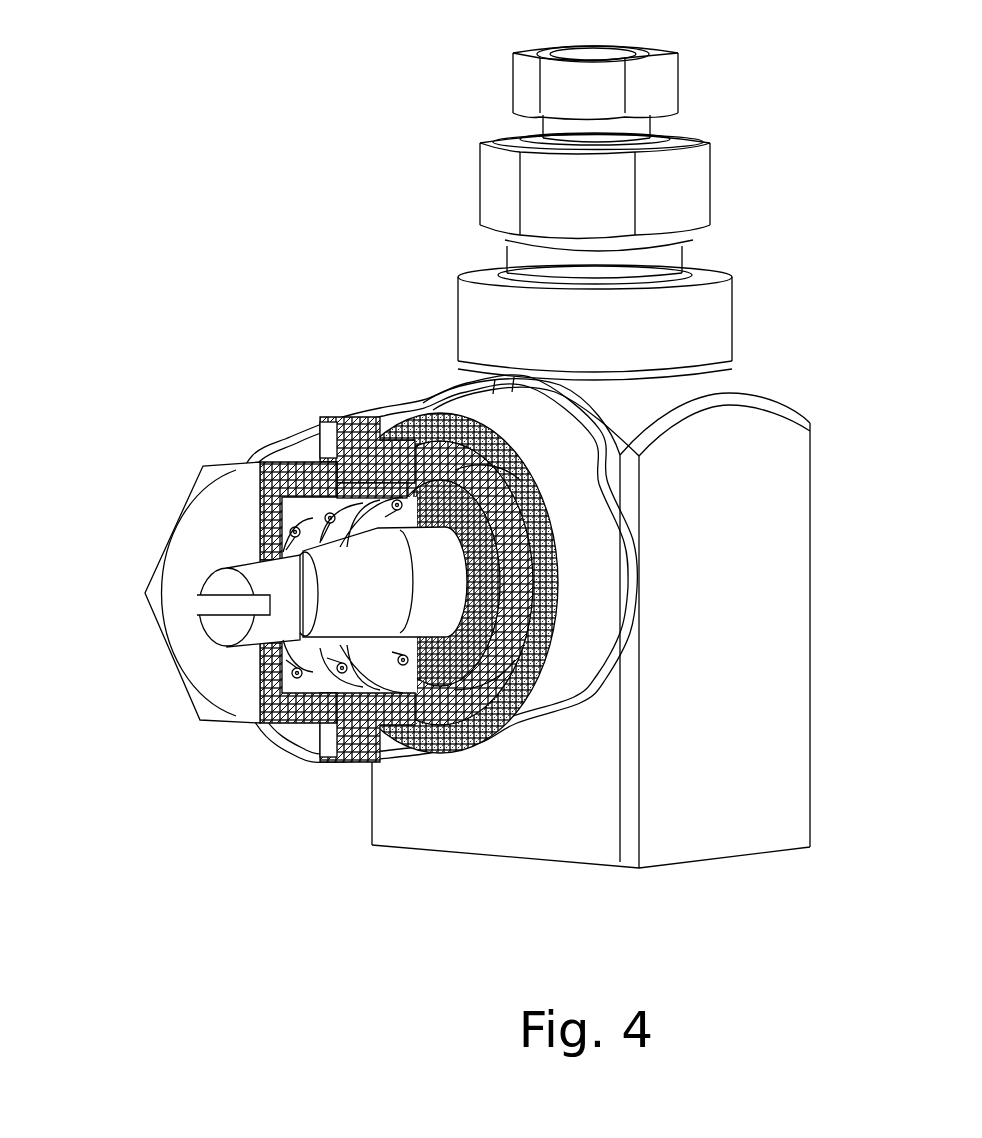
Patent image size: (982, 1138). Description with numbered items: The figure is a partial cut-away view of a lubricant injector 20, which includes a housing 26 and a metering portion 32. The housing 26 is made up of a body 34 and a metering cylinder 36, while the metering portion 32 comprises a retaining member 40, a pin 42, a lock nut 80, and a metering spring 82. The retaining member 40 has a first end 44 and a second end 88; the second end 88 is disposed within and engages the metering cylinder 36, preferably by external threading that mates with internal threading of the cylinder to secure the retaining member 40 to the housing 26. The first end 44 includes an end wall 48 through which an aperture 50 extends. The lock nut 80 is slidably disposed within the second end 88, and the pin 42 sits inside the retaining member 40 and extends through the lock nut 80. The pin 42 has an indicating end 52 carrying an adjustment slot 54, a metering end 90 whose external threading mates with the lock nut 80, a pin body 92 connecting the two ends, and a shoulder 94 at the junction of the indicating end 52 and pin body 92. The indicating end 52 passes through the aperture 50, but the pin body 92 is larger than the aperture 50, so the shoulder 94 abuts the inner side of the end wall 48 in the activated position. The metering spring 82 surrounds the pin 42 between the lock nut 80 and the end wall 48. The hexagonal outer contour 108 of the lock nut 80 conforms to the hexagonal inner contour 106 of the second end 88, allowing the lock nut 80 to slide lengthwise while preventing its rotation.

The lubricant injector 20 is at (505, 478).
The housing 26 is at (669, 457).
The metering portion 32 is at (255, 548).
The body 34 is at (724, 770).
The metering cylinder 36 is at (576, 590).
The retaining member 40 is at (190, 592).
The pin 42 is at (262, 460).
The first end 44 is at (155, 557).
The end wall 48 is at (211, 685).
The aperture 50 is at (257, 521).
The indicating end 52 is at (173, 601).
The adjustment slot 54 is at (230, 605).
The lock nut 80 is at (448, 448).
The metering spring 82 is at (325, 517).
The second end 88 is at (405, 460).
The metering end 90 is at (397, 643).
The pin body 92 is at (330, 650).
The shoulder 94 is at (285, 662).
The inner contour 106 is at (490, 505).
The outer contour 108 is at (487, 630).